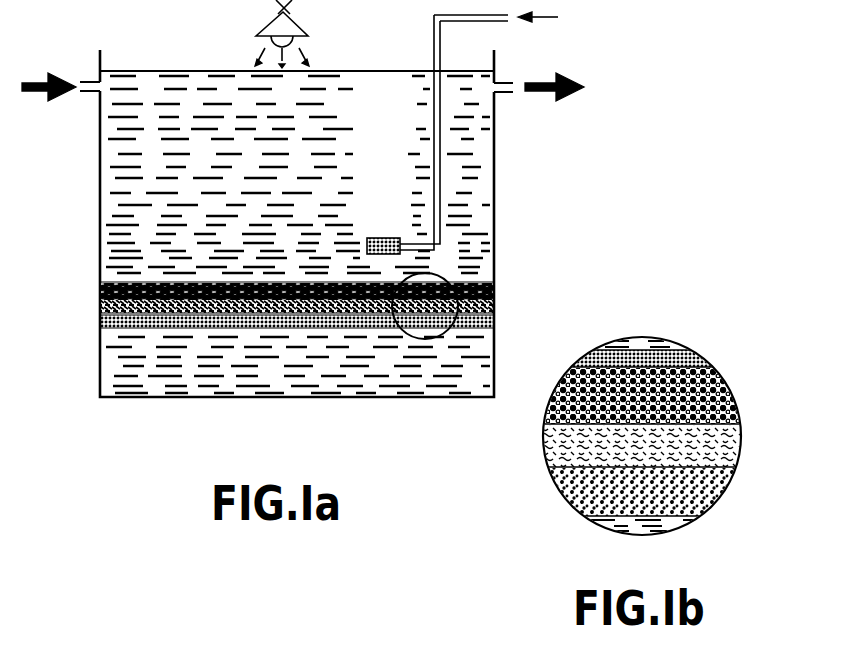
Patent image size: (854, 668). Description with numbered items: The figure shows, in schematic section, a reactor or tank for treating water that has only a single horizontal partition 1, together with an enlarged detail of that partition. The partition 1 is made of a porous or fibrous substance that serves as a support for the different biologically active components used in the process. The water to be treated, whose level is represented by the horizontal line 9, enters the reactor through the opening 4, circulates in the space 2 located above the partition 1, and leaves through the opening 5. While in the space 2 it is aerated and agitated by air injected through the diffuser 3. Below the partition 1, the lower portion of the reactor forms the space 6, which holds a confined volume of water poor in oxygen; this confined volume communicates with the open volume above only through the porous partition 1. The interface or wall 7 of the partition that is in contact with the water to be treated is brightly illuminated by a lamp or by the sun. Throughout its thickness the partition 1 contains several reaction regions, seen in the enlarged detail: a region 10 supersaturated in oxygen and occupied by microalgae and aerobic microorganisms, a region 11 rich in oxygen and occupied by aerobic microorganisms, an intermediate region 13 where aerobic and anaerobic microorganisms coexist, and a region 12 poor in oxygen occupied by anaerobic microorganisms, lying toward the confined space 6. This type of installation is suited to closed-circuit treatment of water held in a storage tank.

In FIG. 1a, the horizontal partition 1 is at (493, 300).
In FIG. 1a, the space above the partition 2 is at (305, 137).
In FIG. 1b, the space above the partition 2 is at (640, 345).
In FIG. 1a, the diffuser 3 is at (398, 244).
In FIG. 1a, the opening 4 is at (73, 83).
In FIG. 1a, the opening 5 is at (513, 88).
In FIG. 1a, the space below the partition 6 is at (373, 380).
In FIG. 1b, the space below the partition 6 is at (660, 530).
In FIG. 1a, the interface (wall) of the partition 7 is at (130, 331).
In FIG. 1a, the horizontal line 9 is at (165, 71).
In FIG. 1b, the region supersaturated in oxygen 10 is at (695, 362).
In FIG. 1b, the region rich in oxygen 11 is at (718, 400).
In FIG. 1b, the region poor in oxygen 12 is at (705, 497).
In FIG. 1b, the intermediate region 13 is at (740, 447).